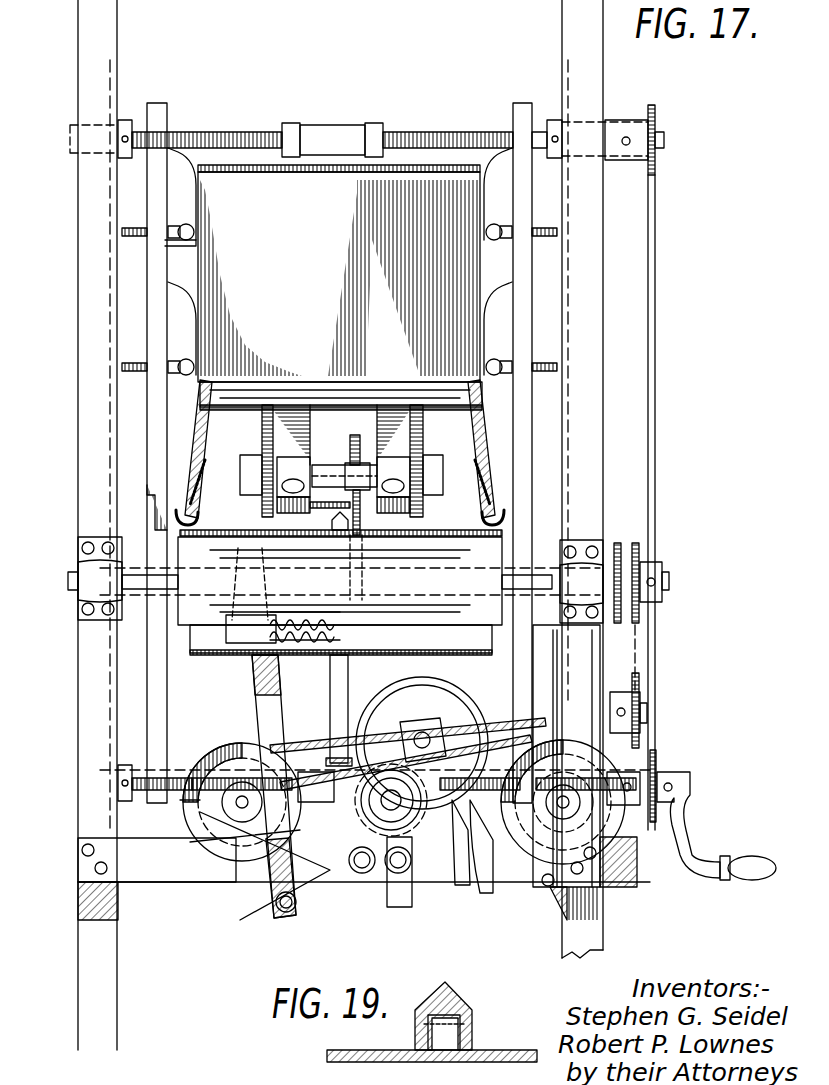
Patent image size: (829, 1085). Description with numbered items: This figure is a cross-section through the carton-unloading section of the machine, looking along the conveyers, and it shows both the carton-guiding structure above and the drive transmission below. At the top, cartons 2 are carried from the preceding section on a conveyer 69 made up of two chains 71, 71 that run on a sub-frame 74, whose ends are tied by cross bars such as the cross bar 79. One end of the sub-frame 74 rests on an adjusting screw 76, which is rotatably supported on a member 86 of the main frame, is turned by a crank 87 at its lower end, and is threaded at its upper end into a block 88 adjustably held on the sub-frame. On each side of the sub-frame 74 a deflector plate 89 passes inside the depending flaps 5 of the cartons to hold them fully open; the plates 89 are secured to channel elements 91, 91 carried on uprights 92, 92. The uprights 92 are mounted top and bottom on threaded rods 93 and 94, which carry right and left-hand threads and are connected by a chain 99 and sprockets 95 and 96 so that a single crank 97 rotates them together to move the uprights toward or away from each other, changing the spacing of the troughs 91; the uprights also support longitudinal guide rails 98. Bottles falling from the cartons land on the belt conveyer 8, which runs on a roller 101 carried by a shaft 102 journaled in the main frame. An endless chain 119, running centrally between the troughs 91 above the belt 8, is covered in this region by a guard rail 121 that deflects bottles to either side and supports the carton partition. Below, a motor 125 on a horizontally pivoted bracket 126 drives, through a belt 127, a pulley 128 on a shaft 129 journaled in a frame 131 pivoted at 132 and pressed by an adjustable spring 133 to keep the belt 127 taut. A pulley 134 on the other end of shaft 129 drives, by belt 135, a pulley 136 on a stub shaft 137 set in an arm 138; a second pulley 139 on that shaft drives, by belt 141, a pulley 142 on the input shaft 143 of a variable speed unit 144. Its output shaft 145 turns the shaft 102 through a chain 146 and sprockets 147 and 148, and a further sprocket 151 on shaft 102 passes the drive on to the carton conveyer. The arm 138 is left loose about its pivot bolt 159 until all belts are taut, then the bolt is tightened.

In FIG. 17, the carton 2 is at (330, 262).
In FIG. 17, the depending flap 5 is at (190, 410).
In FIG. 17, the belt conveyer 8 is at (215, 658).
In FIG. 19, the belt conveyer 8 is at (345, 1052).
In FIG. 17, the conveyer 69 is at (340, 426).
In FIG. 17, the conveyer chain 71 is at (268, 428).
In FIG. 17, the sub-frame 74 is at (280, 515).
In FIG. 17, the adjusting screw 76 is at (362, 522).
In FIG. 17, the cross bar 79 is at (332, 512).
In FIG. 17, the main frame member 86 is at (133, 568).
In FIG. 17, the crank 87 is at (380, 680).
In FIG. 17, the block 88 is at (346, 478).
In FIG. 17, the deflector plate 89 is at (205, 470).
In FIG. 17, the channel element 91 is at (190, 520).
In FIG. 17, the upright 92 is at (155, 422).
In FIG. 17, the threaded rod 93 is at (243, 132).
In FIG. 17, the threaded rod 94 is at (228, 775).
In FIG. 17, the sprocket 95 is at (655, 120).
In FIG. 17, the sprocket 96 is at (656, 760).
In FIG. 17, the crank 97 is at (692, 840).
In FIG. 17, the guide rail 98 is at (182, 200).
In FIG. 17, the chain 99 is at (656, 315).
In FIG. 17, the roller 101 is at (508, 545).
In FIG. 17, the shaft 102 is at (670, 582).
In FIG. 19, the endless chain 119 is at (452, 1036).
In FIG. 17, the guard rail 121 is at (330, 550).
In FIG. 19, the guard rail 121 is at (456, 998).
In FIG. 17, the motor 125 is at (438, 692).
In FIG. 17, the bracket 126 is at (462, 860).
In FIG. 17, the belt 127 is at (300, 730).
In FIG. 17, the pulley 128 is at (238, 740).
In FIG. 17, the shaft 129 is at (215, 842).
In FIG. 17, the frame 131 is at (255, 870).
In FIG. 17, the pivot 132 is at (286, 912).
In FIG. 17, the spring 133 is at (300, 612).
In FIG. 17, the pulley 134 is at (240, 800).
In FIG. 17, the belt 135 is at (245, 832).
In FIG. 17, the pulley 136 is at (372, 828).
In FIG. 17, the stub shaft 137 is at (425, 784).
In FIG. 17, the arm 138 is at (402, 907).
In FIG. 17, the pulley 139 is at (350, 860).
In FIG. 17, the belt 141 is at (462, 735).
In FIG. 17, the pulley 142 is at (484, 870).
In FIG. 17, the input shaft 143 is at (590, 842).
In FIG. 17, the variable speed unit 144 is at (548, 670).
In FIG. 17, the output shaft 145 is at (648, 712).
In FIG. 17, the chain 146 is at (640, 637).
In FIG. 17, the sprocket 147 is at (640, 684).
In FIG. 17, the sprocket 148 is at (640, 545).
In FIG. 17, the sprocket 151 is at (620, 545).
In FIG. 17, the pivot bolt 159 is at (360, 876).